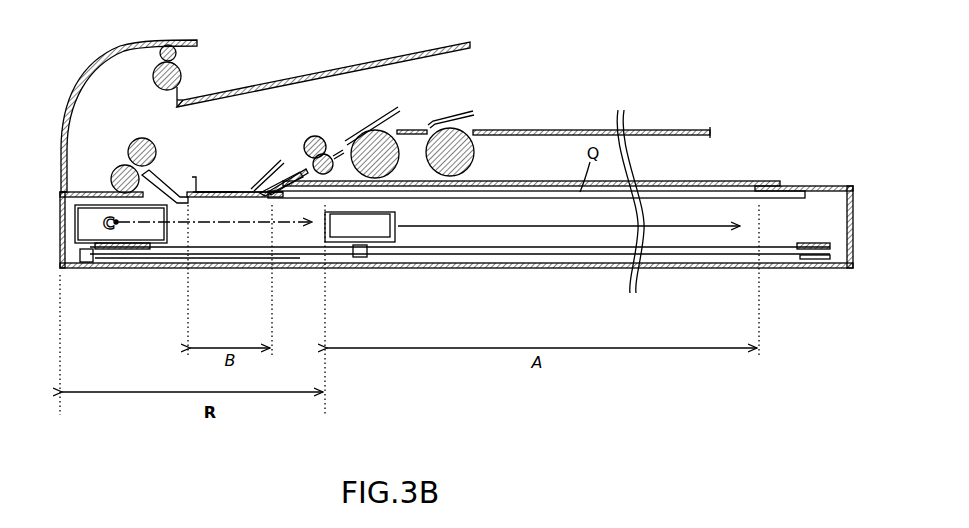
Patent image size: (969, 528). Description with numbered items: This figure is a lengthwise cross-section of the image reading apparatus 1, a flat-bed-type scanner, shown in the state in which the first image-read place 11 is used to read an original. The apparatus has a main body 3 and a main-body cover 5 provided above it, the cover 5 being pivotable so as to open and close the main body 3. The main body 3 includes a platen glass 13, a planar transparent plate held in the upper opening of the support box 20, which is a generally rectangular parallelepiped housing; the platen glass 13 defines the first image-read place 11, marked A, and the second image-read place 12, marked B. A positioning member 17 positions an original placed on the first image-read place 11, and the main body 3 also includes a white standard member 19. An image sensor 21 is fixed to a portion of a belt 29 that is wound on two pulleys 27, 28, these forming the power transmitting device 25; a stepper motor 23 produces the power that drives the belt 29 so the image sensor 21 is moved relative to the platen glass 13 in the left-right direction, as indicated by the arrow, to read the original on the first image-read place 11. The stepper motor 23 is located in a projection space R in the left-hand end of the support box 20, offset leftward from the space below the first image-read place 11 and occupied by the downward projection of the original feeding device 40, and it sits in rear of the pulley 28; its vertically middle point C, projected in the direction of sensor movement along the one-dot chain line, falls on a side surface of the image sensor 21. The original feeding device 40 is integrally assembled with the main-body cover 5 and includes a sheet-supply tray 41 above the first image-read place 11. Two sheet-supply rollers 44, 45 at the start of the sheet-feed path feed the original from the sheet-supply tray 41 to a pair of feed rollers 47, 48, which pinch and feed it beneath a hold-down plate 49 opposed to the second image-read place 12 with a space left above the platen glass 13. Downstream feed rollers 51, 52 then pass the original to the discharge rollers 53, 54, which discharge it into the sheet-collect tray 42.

The image reading apparatus 1 is at (706, 77).
The main body 3 is at (855, 247).
The main-body cover 5 is at (735, 178).
The first image-read place 11 is at (515, 197).
The second image-read place 12 is at (233, 191).
The platen glass 13 is at (750, 197).
The positioning member 17 is at (329, 150).
The white standard member 19 is at (292, 204).
The support box 20 is at (833, 187).
The image sensor 21 is at (362, 228).
The stepper motor 23 is at (127, 244).
The power transmitting device 25 is at (680, 258).
The pulley 27 is at (825, 260).
The pulley 28 is at (86, 262).
The belt 29 is at (772, 254).
The original feeding device 40 is at (498, 86).
The sheet-supply tray 41 is at (557, 130).
The sheet-collect tray 42 is at (303, 74).
The sheet-supply roller 44 is at (462, 143).
The sheet-supply roller 45 is at (392, 135).
The feed roller 47 is at (311, 172).
The feed roller 48 is at (307, 138).
The hold-down plate 49 is at (198, 177).
The feed roller 51 is at (117, 168).
The feed roller 52 is at (156, 145).
The discharge roller 53 is at (181, 77).
The discharge roller 54 is at (177, 52).